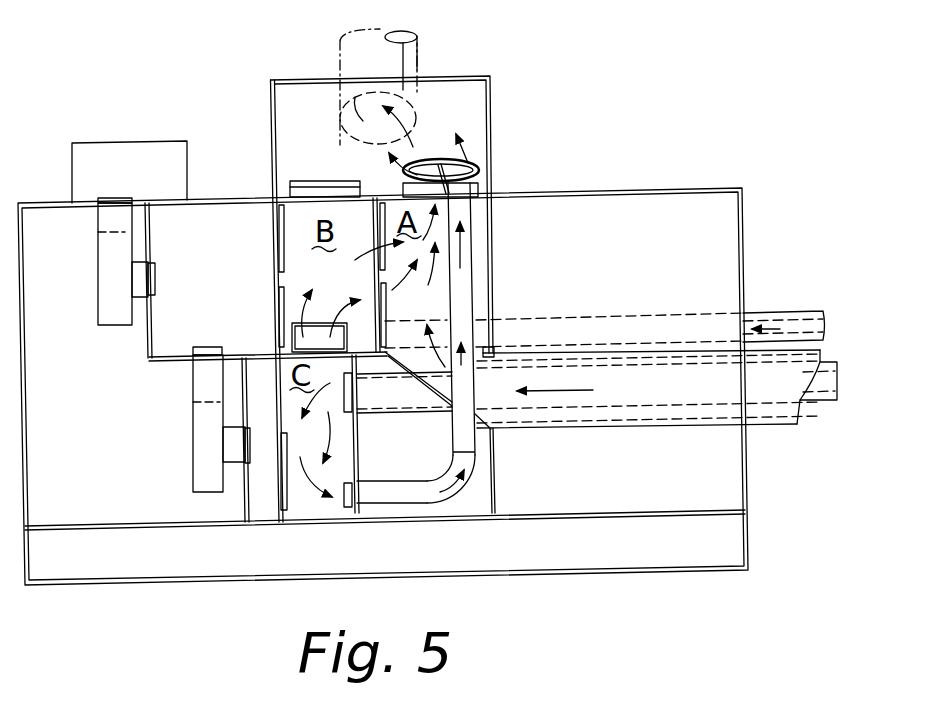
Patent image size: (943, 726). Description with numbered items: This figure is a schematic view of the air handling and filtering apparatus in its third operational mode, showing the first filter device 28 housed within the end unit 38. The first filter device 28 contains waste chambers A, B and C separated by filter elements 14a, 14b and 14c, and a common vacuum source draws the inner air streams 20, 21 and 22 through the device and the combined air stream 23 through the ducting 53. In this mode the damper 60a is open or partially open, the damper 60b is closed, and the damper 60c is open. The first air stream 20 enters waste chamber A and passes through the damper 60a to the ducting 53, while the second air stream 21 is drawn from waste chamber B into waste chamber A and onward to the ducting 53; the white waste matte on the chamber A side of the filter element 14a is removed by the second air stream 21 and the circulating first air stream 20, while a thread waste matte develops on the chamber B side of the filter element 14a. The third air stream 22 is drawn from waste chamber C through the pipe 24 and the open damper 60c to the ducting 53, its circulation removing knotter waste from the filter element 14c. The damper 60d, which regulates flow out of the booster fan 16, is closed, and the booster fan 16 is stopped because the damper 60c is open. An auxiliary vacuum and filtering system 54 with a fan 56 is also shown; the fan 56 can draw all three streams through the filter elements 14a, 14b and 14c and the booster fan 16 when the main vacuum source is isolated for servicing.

The booster fan 16 is at (192, 428).
The first air stream 20 is at (637, 389).
The second air stream 21 is at (828, 327).
The third air stream 22 is at (812, 383).
The combined air stream 23 is at (388, 68).
The pipe 24 is at (410, 483).
The first filter device 28 is at (237, 170).
The end unit 38 is at (8, 402).
The ducting 53 is at (420, 38).
The auxiliary vacuum and filtering system 54 is at (58, 242).
The fan 56 is at (117, 326).
The filter element 14a is at (385, 308).
The filter element 14b is at (277, 288).
The filter element 14c is at (277, 487).
The damper 60a is at (470, 158).
The damper 60b is at (343, 178).
The damper 60c is at (458, 172).
The damper 60d is at (214, 319).